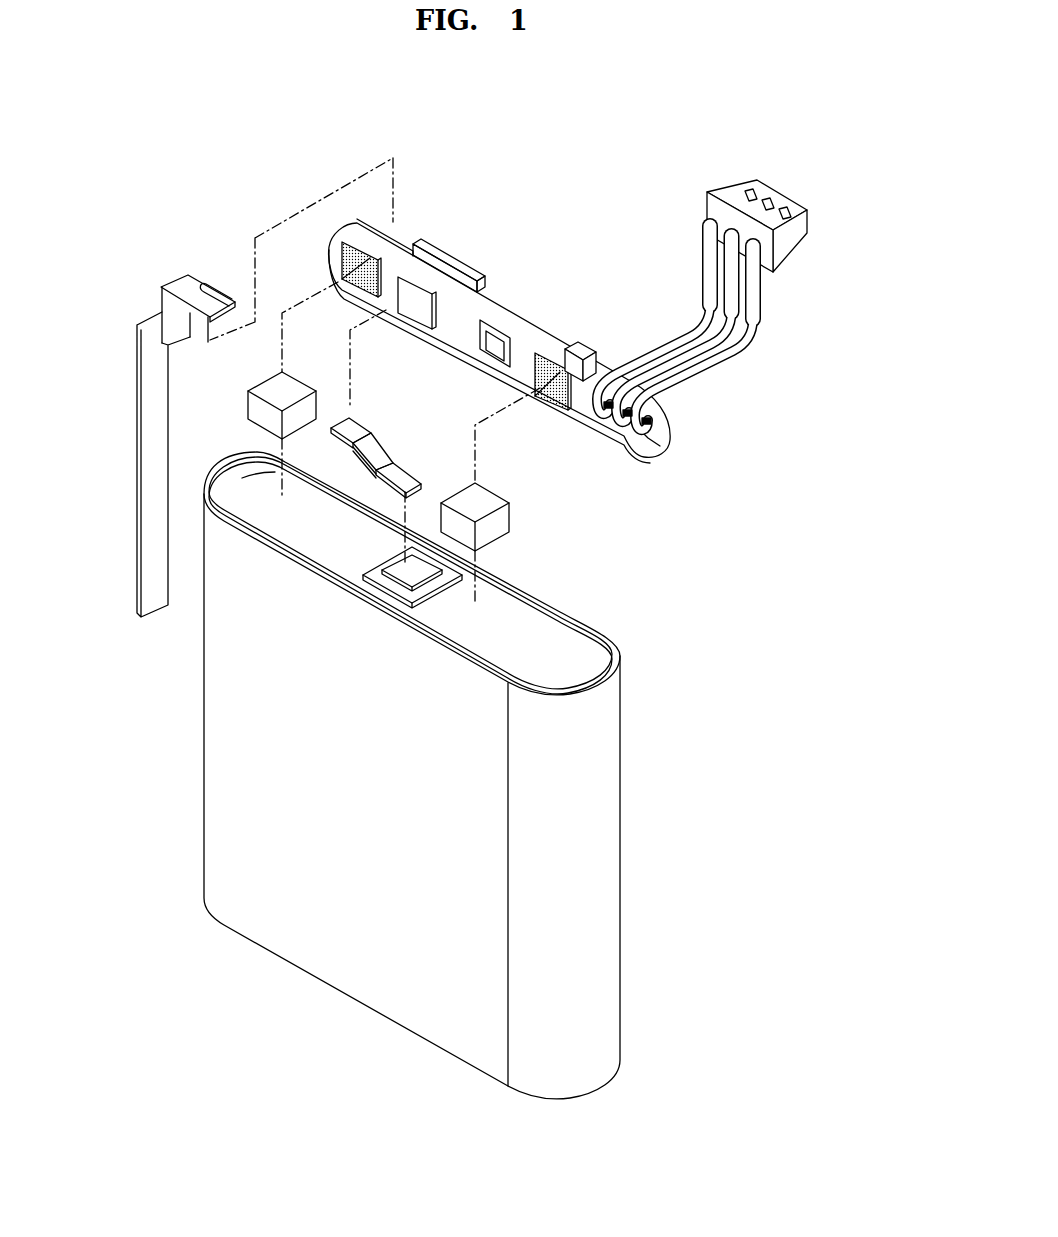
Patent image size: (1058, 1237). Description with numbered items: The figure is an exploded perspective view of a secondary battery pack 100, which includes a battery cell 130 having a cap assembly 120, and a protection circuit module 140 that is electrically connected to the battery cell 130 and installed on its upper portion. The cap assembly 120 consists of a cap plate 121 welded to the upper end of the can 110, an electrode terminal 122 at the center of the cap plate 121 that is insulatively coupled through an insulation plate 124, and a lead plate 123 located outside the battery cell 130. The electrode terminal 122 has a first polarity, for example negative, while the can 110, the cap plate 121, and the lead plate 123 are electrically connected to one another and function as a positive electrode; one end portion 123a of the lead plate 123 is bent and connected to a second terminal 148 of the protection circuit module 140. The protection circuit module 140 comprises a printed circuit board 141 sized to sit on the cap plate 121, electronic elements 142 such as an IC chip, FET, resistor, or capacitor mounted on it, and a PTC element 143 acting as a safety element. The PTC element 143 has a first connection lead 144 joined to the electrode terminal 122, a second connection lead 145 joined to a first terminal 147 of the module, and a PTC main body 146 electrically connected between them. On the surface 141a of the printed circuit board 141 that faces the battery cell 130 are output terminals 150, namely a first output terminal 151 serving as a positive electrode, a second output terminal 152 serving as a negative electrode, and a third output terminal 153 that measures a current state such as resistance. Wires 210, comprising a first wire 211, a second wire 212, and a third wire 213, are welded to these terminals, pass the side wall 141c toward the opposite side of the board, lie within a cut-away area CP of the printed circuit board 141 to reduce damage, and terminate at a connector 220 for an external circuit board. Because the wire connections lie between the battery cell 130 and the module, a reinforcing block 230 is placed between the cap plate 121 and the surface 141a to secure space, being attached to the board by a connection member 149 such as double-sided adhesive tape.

The secondary battery pack 100 is at (582, 208).
The can 110 is at (618, 716).
The cap assembly 120 is at (635, 620).
The cap plate 121 is at (234, 482).
The electrode terminal 122 is at (398, 578).
The lead plate 123 is at (138, 445).
The end portion 123a is at (197, 287).
The insulation plate 124 is at (473, 574).
The battery cell 130 is at (716, 577).
The protection circuit module 140 is at (696, 441).
The printed circuit board 141 is at (511, 309).
The surface 141a is at (663, 447).
The side wall 141c is at (587, 379).
The electronic element 142 is at (448, 272).
The PTC element 143 is at (400, 426).
The first connection lead 144 is at (417, 470).
The second connection lead 145 is at (363, 428).
The PTC main body 146 is at (385, 450).
The first terminal 147 is at (406, 297).
The second terminal 148 is at (387, 237).
The connection member 149 is at (351, 266).
The output terminals 150 is at (622, 480).
The first output terminal 151 is at (606, 412).
The second output terminal 152 is at (648, 432).
The third output terminal 153 is at (627, 422).
The wires 210 is at (748, 328).
The first wire 211 is at (714, 310).
The second wire 212 is at (759, 286).
The third wire 213 is at (736, 300).
The connector 220 is at (757, 185).
The reinforcing block 230 is at (256, 407).
The cut-away area CP is at (607, 346).